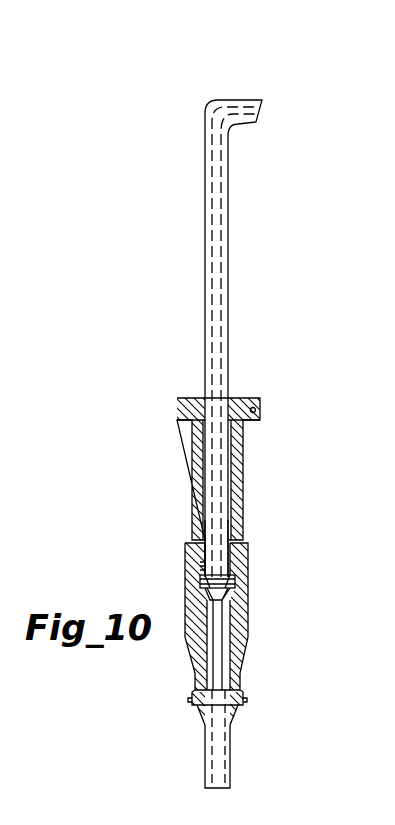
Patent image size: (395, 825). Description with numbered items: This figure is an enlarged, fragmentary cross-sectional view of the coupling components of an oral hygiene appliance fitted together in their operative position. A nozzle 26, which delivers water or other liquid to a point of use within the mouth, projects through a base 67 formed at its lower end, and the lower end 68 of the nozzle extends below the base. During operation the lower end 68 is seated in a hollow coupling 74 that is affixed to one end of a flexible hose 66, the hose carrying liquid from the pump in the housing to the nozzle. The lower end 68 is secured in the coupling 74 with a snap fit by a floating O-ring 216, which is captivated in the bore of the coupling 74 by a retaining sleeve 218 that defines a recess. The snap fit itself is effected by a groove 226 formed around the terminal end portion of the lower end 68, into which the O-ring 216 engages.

The nozzle 26 is at (229, 272).
The base 67 is at (243, 462).
The lower end of the nozzle 68 is at (222, 529).
The retaining sleeve 218 is at (200, 565).
The floating O-ring 216 is at (240, 583).
The groove 226 is at (237, 604).
The hollow coupling 74 is at (248, 626).
The flexible hose 66 is at (230, 766).